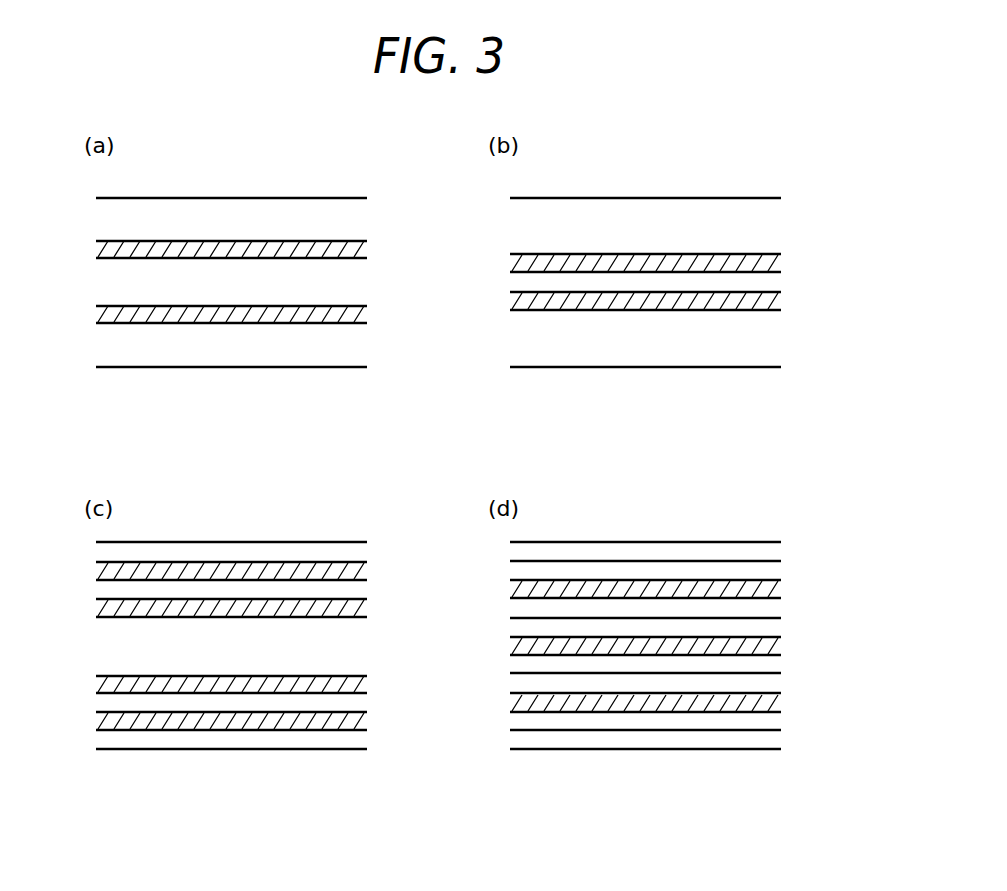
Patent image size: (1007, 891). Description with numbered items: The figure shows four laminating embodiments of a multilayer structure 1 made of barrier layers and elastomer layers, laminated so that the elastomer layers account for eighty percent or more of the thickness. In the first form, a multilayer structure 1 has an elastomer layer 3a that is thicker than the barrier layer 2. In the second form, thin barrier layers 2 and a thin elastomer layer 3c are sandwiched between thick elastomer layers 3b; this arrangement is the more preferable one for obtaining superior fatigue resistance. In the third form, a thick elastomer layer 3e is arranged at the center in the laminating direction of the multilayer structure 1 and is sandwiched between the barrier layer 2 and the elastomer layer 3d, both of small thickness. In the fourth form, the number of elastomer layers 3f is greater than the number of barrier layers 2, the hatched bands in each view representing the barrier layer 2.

The multilayer structure 1 is at (537, 326).
The barrier layer 2 is at (438, 481).
The elastomer layer 3a is at (381, 346).
The thick elastomer layer 3b is at (803, 346).
The elastomer layer 3c is at (520, 283).
The elastomer layer 3d is at (355, 743).
The thick elastomer layer 3e is at (253, 657).
The elastomer layer 3f is at (770, 744).